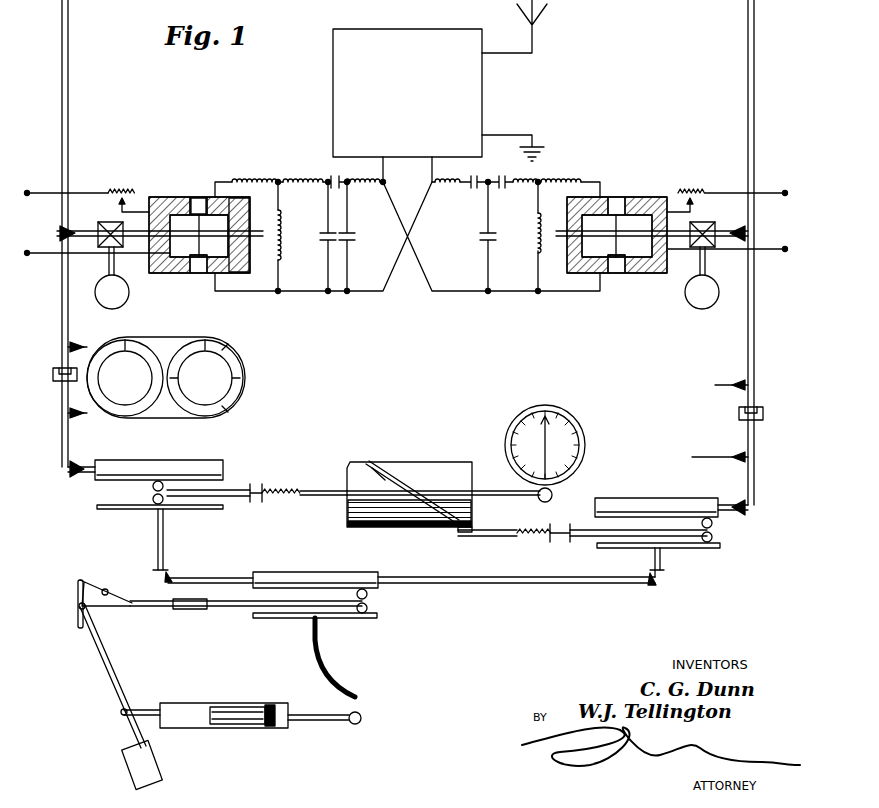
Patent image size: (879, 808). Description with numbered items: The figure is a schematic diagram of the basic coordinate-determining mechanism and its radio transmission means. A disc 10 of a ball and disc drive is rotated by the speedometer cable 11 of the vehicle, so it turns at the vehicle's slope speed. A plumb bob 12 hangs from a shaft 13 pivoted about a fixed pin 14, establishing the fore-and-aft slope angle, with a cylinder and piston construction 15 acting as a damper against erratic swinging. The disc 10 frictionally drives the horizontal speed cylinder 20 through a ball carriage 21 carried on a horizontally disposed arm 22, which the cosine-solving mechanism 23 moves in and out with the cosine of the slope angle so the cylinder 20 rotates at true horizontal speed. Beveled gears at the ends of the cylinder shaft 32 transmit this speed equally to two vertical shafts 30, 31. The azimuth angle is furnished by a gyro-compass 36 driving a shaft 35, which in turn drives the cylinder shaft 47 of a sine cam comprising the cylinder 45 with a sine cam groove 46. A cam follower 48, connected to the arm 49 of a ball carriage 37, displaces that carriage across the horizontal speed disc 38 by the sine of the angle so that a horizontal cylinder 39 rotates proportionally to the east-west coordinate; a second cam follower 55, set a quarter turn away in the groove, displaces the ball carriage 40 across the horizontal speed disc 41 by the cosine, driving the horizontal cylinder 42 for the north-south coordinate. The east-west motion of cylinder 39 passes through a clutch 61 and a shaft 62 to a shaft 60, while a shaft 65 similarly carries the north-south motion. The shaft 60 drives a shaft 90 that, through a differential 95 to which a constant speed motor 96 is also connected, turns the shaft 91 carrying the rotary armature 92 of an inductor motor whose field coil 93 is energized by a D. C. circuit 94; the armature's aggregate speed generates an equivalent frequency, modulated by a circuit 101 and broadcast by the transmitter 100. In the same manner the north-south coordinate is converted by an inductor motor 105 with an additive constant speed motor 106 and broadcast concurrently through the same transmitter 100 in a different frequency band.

The shaft 60 is at (69, 75).
The shaft 65 is at (755, 108).
The transmitter 100 is at (440, 91).
The D. C. circuit 94 is at (43, 190).
The shaft 90 is at (88, 192).
The differential 95 is at (107, 249).
The constant speed motor 96 is at (129, 294).
The field coil 93 is at (153, 195).
The shaft 91 is at (198, 197).
The rotary armature 92 is at (216, 195).
The circuit 101 is at (300, 292).
The inductor motor 105 is at (630, 197).
The constant speed motor 106 is at (687, 302).
The clutch 61 is at (53, 372).
The shaft 62 is at (62, 467).
The horizontal cylinder 39 is at (152, 458).
The ball carriage 37 is at (150, 492).
The horizontal speed disc 38 is at (100, 510).
The vertical shaft 30 is at (165, 530).
The arm 49 is at (232, 490).
The cylinder 45 is at (455, 462).
The cam follower 48 is at (405, 483).
The sine cam groove 46 is at (375, 470).
The cylinder shaft 47 is at (500, 475).
The cam follower 55 is at (464, 533).
The gyro-compass 36 is at (580, 420).
The shaft 35 is at (553, 495).
The cylinder shaft 32 is at (500, 576).
The horizontal cylinder 42 is at (650, 497).
The ball carriage 40 is at (714, 530).
The horizontal speed disc 41 is at (718, 548).
The vertical shaft 31 is at (662, 560).
The horizontal speed cylinder 20 is at (295, 571).
The arm 22 is at (222, 608).
The ball carriage 21 is at (368, 600).
The disc 10 is at (378, 618).
The speedometer cable 11 is at (328, 662).
The fixed pin 14 is at (76, 606).
The cosine-solving mechanism 23 is at (100, 588).
The shaft 13 is at (100, 668).
The plumb bob 12 is at (128, 770).
The cylinder and piston construction 15 is at (238, 703).